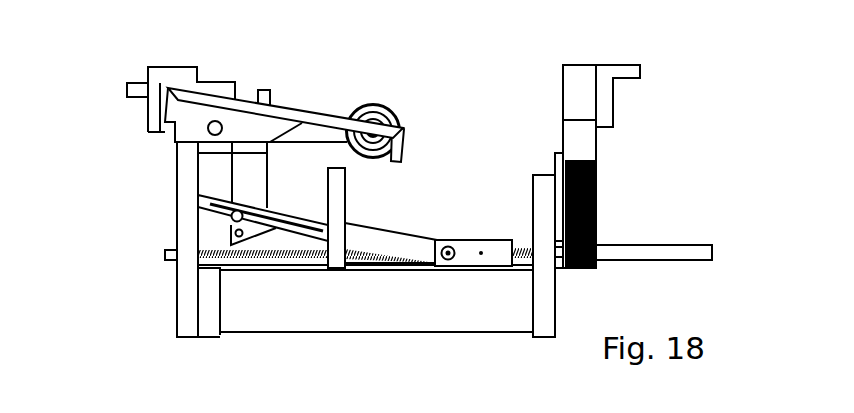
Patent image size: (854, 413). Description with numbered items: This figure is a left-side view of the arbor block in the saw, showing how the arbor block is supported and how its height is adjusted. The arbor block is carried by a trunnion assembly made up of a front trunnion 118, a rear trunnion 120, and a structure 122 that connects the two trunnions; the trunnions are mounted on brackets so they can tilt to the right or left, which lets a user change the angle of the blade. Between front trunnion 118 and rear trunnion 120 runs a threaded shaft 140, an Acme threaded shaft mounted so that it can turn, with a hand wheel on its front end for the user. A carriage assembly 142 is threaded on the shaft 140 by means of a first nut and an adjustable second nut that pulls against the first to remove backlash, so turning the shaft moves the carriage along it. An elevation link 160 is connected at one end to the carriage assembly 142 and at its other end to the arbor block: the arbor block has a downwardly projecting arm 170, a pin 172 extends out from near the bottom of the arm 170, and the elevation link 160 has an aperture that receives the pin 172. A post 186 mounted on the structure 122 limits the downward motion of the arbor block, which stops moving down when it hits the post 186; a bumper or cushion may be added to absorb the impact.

The front trunnion 118 is at (577, 137).
The rear trunnion 120 is at (187, 173).
The structure connecting the two trunnions 122 is at (272, 308).
The threaded shaft 140 is at (672, 250).
The carriage assembly 142 is at (467, 272).
The elevation link 160 is at (370, 238).
The downwardly projecting arm 170 is at (265, 95).
The pin 172 is at (232, 218).
The post 186 is at (337, 187).